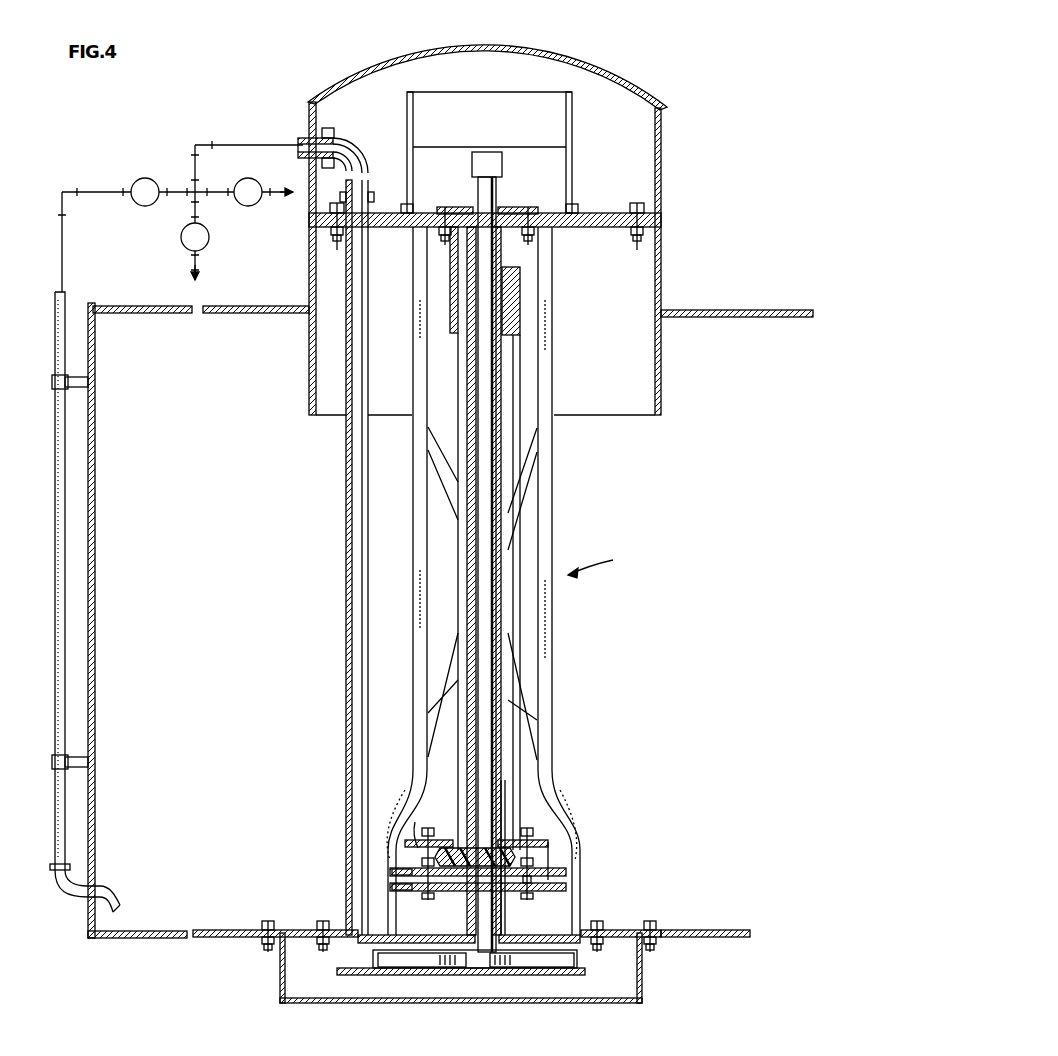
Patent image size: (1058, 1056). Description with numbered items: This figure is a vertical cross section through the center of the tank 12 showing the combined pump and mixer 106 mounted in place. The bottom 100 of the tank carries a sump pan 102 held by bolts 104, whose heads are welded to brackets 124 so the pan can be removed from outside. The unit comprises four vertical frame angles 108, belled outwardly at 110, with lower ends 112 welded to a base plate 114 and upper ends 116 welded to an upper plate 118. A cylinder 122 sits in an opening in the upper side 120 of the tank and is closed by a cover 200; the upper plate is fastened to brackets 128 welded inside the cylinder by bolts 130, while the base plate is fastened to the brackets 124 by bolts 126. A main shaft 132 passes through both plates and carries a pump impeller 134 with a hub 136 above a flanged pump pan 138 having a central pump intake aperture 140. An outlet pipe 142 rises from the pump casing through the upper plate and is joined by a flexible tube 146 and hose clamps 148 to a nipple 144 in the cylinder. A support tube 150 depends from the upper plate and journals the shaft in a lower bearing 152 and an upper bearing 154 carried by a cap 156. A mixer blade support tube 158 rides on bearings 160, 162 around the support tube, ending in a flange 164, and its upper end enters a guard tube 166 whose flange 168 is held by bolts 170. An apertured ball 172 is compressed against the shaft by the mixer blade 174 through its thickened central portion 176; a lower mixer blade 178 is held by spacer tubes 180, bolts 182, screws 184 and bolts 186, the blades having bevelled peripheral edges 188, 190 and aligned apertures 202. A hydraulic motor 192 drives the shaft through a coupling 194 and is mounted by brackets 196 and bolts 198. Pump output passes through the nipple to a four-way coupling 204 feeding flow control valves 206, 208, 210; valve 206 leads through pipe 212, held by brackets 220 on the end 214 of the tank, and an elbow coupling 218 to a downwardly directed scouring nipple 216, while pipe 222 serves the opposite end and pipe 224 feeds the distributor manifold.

The tank 12 is at (718, 310).
The bottom 100 is at (700, 938).
The sump pan 102 is at (592, 1003).
The bolts 104 is at (268, 950).
The combined pump and mixer 106 is at (607, 562).
The vertical frame angles 108 is at (553, 500).
The belled portion 110 is at (406, 830).
The lower ends 112 is at (367, 913).
The base plate 114 is at (415, 968).
The upper ends 116 is at (414, 314).
The upper plate 118 is at (603, 213).
The upper side 120 is at (245, 313).
The cylinder 122 is at (661, 370).
The brackets 124 is at (300, 930).
The bolts 126 is at (323, 952).
The brackets 128 is at (336, 204).
The bolts 130 is at (340, 233).
The main shaft 132 is at (458, 520).
The pump impeller 134 is at (430, 968).
The hub 136 is at (500, 968).
The pump pan 138 is at (552, 968).
The pump intake aperture 140 is at (472, 968).
The outlet pipe 142 is at (346, 793).
The nipple 144 is at (305, 138).
The flexible tube 146 is at (360, 150).
The hose clamps 148 is at (330, 130).
The support tube 150 is at (501, 380).
The lower bearing 152 is at (506, 778).
The upper bearing 154 is at (496, 207).
The cap 156 is at (508, 207).
The mixer blade support tube 158 is at (535, 440).
The bearing 160 is at (520, 300).
The bearing 162 is at (535, 722).
The flange 164 is at (566, 857).
The guard tube 166 is at (521, 340).
The flange 168 is at (450, 250).
The bolts 170 is at (444, 236).
The apertured ball 172 is at (510, 840).
The mixer blade 174 is at (566, 875).
The central portion 176 is at (455, 870).
The lower mixer blade 178 is at (566, 888).
The spacer tubes 180 is at (424, 886).
The bolts 182 is at (422, 858).
The screws 184 is at (430, 840).
The bolts 186 is at (415, 823).
The peripheral edge 188 is at (392, 872).
The peripheral edge 190 is at (392, 887).
The hydraulic motor 192 is at (548, 95).
The coupling 194 is at (472, 165).
The brackets 196 is at (573, 128).
The bolts 198 is at (576, 205).
The cover 200 is at (352, 80).
The apertures 202 is at (530, 888).
The four-way coupling 204 is at (195, 190).
The flow control valve 206 is at (147, 207).
The flow control valve 208 is at (183, 245).
The flow control valve 210 is at (248, 207).
The pipe 212 is at (65, 447).
The end 214 is at (95, 580).
The scouring nipple 216 is at (114, 900).
The elbow coupling 218 is at (58, 897).
The brackets 220 is at (90, 385).
The pipe 222 is at (293, 190).
The pipe 224 is at (198, 272).